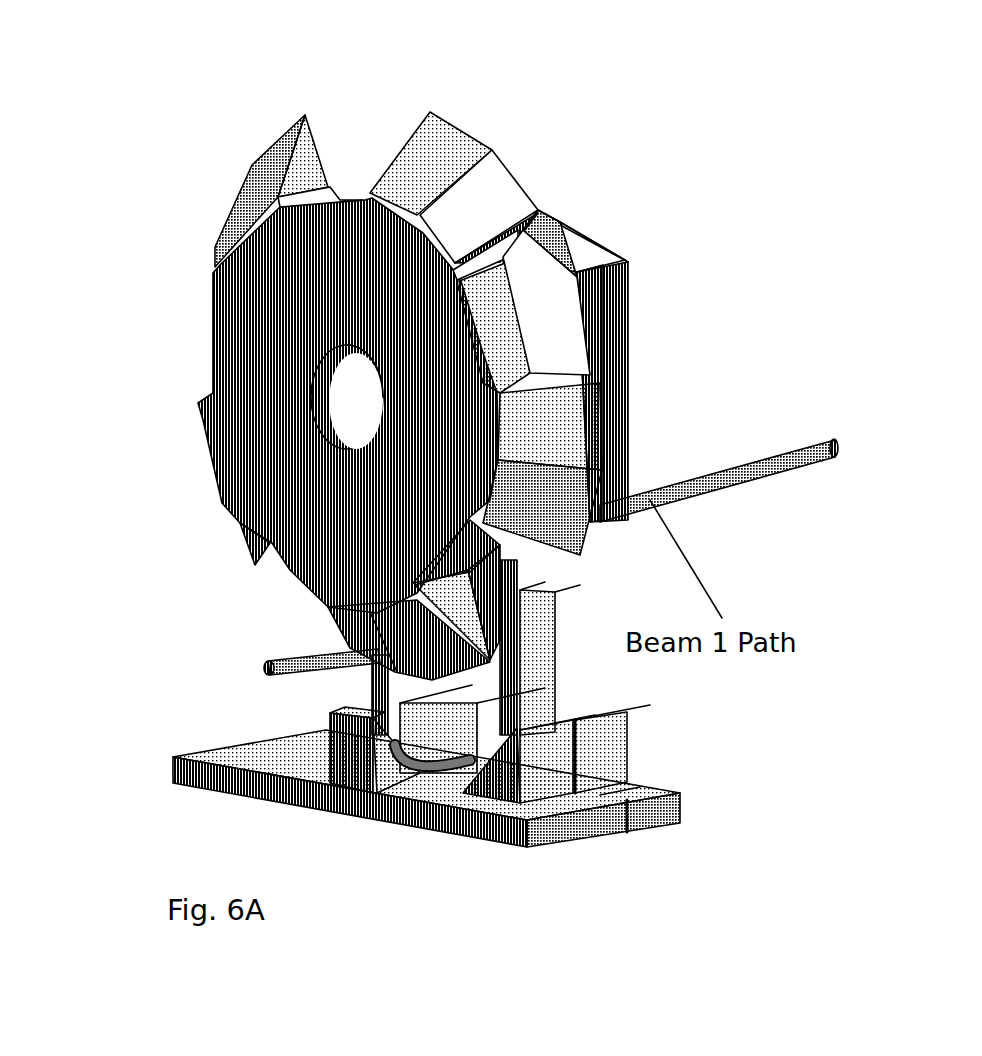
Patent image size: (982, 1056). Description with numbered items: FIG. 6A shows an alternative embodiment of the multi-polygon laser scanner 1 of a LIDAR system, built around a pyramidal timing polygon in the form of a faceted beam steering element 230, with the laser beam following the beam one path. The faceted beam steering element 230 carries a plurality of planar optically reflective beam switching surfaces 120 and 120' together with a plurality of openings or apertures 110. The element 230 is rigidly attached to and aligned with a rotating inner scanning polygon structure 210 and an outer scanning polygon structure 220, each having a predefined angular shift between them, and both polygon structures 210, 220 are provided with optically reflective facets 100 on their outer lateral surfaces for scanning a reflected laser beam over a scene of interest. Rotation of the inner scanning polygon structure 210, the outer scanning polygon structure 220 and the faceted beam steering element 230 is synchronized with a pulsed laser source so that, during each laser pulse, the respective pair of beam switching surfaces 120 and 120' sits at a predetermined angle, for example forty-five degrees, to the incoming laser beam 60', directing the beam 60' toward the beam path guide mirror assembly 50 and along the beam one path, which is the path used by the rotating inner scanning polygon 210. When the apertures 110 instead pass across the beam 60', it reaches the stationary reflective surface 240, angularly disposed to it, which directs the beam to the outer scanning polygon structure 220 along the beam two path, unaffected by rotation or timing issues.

The multi-polygon laser scanner 1 is at (632, 177).
The beam path guide mirror assembly 50 is at (277, 758).
The incoming laser beam 60' is at (274, 666).
The optically reflective facets 100 is at (538, 308).
The apertures 110 is at (348, 128).
The optically reflective beam switching surface 120 is at (459, 212).
The optically reflective beam switching surface 120' is at (553, 239).
The inner scanning polygon structure 210 is at (587, 360).
The outer scanning polygon structure 220 is at (610, 250).
The faceted beam steering element 230 is at (227, 367).
The stationary reflective surface 240 is at (490, 637).